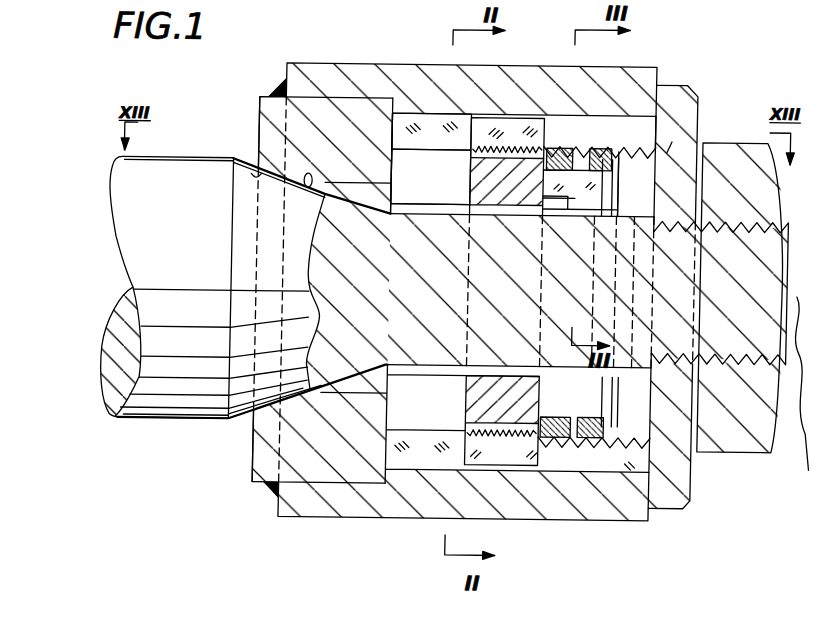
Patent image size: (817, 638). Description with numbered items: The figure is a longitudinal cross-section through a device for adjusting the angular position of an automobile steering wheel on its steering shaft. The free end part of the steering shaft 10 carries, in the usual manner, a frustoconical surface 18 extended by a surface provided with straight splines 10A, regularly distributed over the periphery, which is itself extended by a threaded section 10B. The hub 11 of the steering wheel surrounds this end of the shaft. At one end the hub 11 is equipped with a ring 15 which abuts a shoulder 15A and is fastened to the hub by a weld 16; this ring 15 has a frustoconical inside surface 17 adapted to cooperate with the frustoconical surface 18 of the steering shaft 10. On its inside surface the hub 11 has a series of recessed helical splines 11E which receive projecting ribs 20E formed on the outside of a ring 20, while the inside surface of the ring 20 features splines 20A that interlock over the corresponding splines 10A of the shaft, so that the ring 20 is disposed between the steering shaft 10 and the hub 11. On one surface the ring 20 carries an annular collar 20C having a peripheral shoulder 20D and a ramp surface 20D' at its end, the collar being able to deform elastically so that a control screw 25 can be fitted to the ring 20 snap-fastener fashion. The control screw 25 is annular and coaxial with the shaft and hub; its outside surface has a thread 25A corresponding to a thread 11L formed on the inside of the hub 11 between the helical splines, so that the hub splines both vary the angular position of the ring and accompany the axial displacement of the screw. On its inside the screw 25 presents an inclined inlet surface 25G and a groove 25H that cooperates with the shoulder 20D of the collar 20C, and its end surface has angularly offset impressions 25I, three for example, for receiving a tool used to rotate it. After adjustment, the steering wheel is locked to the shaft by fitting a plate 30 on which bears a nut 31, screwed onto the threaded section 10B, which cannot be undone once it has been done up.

The steering shaft 10 is at (180, 287).
The straight splines 10A is at (443, 208).
The threaded section 10B is at (749, 308).
The hub 11 is at (292, 64).
The recessed helical splines 11E is at (433, 125).
The thread 11L is at (676, 134).
The ring 15 is at (255, 450).
The shoulder 15A is at (382, 102).
The weld 16 is at (276, 495).
The frustoconical inside surface 17 is at (252, 172).
The frustoconical surface 18 is at (303, 189).
The ring 20 is at (526, 116).
The splines 20A is at (480, 215).
The annular collar 20C is at (564, 214).
The peripheral shoulder 20D is at (582, 146).
The ramp surface 20D' is at (607, 290).
The projecting ribs 20E is at (500, 125).
The control screw 25 is at (583, 441).
The thread 25A is at (546, 436).
The inclined inlet surface 25G is at (501, 423).
The groove 25H is at (597, 145).
The impressions 25I is at (648, 155).
The plate 30 is at (694, 84).
The nut 31 is at (740, 140).